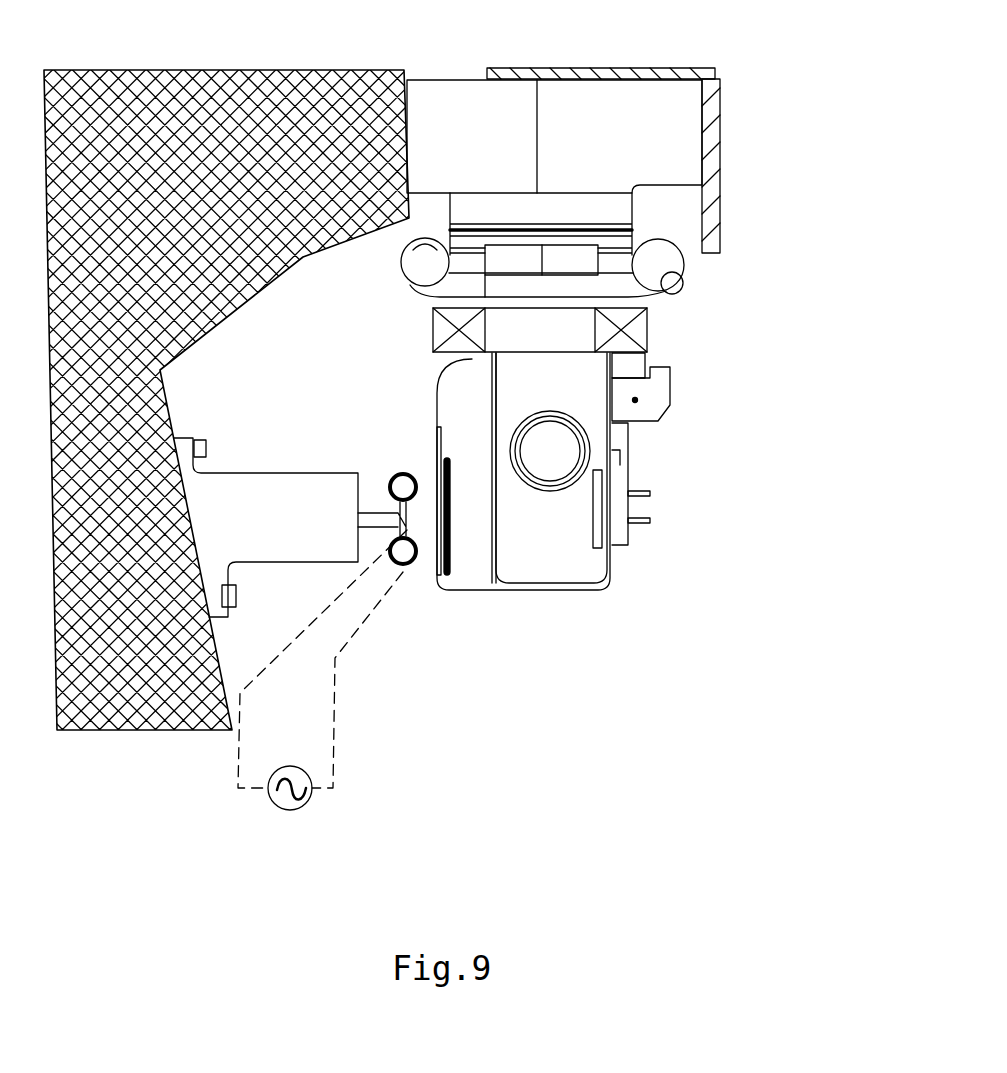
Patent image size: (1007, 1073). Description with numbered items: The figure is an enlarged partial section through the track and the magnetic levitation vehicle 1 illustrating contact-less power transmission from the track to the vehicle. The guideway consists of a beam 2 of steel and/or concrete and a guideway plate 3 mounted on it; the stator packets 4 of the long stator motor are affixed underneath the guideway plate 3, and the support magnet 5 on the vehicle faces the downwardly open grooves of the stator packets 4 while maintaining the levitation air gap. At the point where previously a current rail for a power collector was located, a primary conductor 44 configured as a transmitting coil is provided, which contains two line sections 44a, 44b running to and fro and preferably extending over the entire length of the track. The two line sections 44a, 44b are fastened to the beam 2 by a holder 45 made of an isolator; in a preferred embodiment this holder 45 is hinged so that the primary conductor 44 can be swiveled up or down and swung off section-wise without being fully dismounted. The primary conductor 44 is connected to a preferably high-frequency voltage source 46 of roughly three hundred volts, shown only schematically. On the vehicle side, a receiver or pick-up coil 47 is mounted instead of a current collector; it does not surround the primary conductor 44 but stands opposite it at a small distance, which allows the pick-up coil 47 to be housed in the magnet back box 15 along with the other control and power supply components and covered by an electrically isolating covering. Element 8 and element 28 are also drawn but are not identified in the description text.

The magnetic levitation vehicle 1 is at (682, 440).
The beam 2 is at (153, 742).
The guideway plate 3 is at (618, 69).
The stator packet 4 is at (565, 260).
The support magnet 5 is at (557, 335).
The side wall 8 is at (723, 147).
The magnet back box 15 is at (577, 503).
The capsule 28 is at (452, 365).
The primary conductor 44 is at (443, 372).
The line section 44a is at (415, 473).
The line section 44b is at (412, 562).
The holder 45 is at (260, 520).
The voltage source 46 is at (298, 807).
The pick-up coil 47 is at (450, 553).